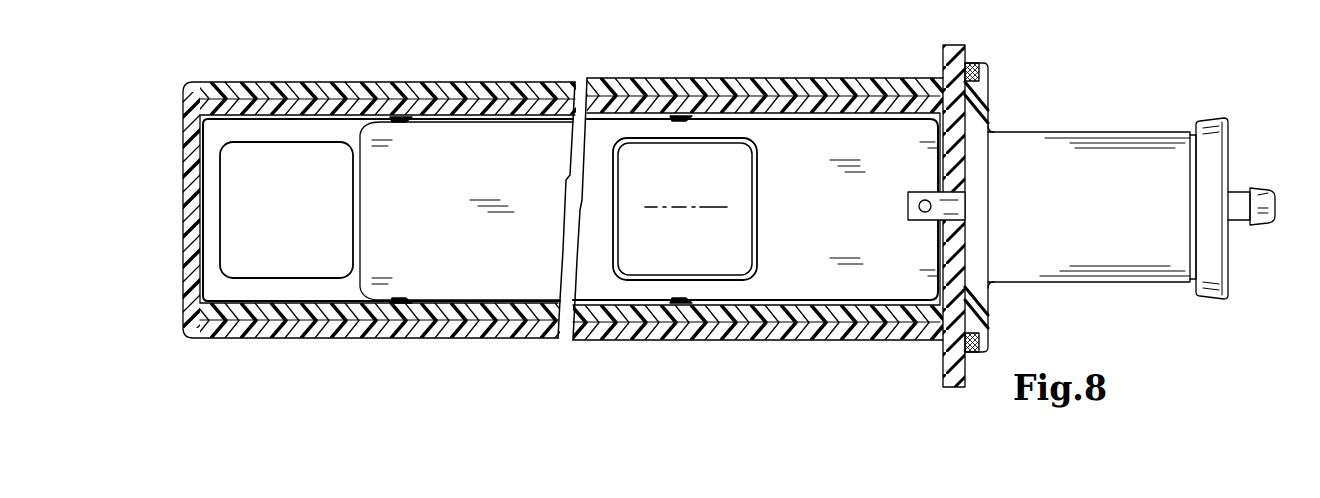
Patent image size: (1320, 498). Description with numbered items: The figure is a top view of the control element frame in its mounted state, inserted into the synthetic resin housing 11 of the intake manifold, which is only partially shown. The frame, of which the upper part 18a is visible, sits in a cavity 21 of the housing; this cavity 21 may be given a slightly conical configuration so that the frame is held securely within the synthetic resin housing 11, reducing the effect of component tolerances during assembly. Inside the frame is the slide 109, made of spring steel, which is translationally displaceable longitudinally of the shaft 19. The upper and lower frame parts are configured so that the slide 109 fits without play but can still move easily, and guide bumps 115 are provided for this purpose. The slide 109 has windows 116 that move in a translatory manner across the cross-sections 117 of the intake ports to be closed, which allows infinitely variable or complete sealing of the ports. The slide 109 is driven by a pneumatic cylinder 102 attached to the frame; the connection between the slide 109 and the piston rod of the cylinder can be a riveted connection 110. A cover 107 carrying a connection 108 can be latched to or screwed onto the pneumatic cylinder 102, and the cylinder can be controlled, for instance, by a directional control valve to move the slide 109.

The synthetic resin housing 11 is at (441, 88).
The upper part of the control element frame 18a is at (259, 320).
The slide 109 is at (476, 290).
The cross-sections of the intake ports 117 is at (228, 186).
The windows 116 is at (729, 282).
The shaft 19 is at (712, 204).
The guide bumps 115 is at (682, 116).
The cavity 21 is at (843, 318).
The riveted connection 110 is at (906, 206).
The pneumatic cylinder 102 is at (1082, 255).
The cover 107 is at (1215, 172).
The connection 108 is at (1258, 210).